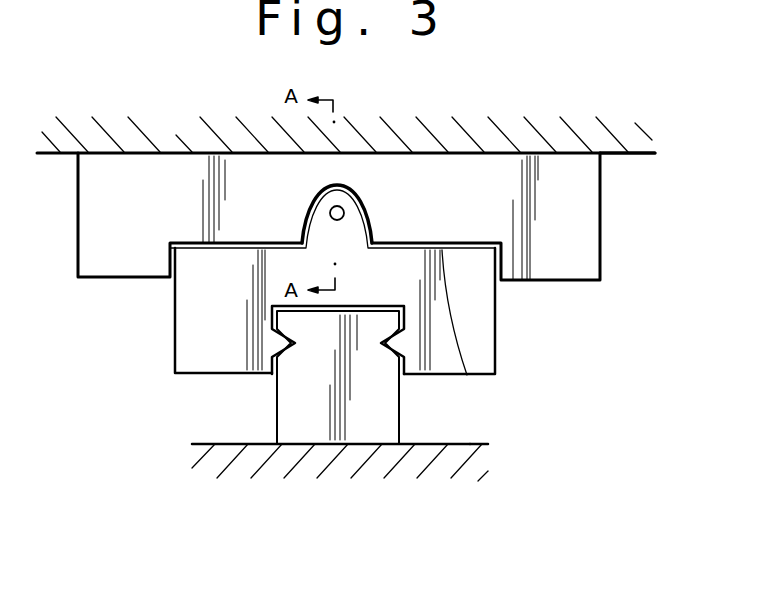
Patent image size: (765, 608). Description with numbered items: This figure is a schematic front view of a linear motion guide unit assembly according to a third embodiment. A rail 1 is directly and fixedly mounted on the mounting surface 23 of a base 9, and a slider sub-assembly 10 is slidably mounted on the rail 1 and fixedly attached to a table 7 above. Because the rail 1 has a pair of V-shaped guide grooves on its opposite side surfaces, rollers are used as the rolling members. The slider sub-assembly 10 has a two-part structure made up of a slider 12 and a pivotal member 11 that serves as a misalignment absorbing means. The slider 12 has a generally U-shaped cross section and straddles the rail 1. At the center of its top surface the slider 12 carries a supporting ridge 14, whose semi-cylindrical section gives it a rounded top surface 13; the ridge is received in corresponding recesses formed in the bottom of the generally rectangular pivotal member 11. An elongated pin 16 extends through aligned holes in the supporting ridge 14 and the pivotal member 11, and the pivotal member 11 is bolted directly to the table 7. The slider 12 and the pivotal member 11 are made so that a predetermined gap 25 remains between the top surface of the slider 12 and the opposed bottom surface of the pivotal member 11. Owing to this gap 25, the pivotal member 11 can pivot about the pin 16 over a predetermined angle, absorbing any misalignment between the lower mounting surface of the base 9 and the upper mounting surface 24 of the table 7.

The rail 1 is at (277, 422).
The table 7 is at (184, 127).
The base 9 is at (350, 497).
The slider sub-assembly 10 is at (588, 285).
The pivotal member 11 is at (538, 263).
The slider 12 is at (487, 338).
The rounded top surface 13 is at (367, 208).
The supporting ridge 14 is at (317, 237).
The pin 16 is at (333, 206).
The mounting surface 23 is at (466, 444).
The upper mounting surface 24 is at (633, 156).
The gap 25 is at (468, 330).